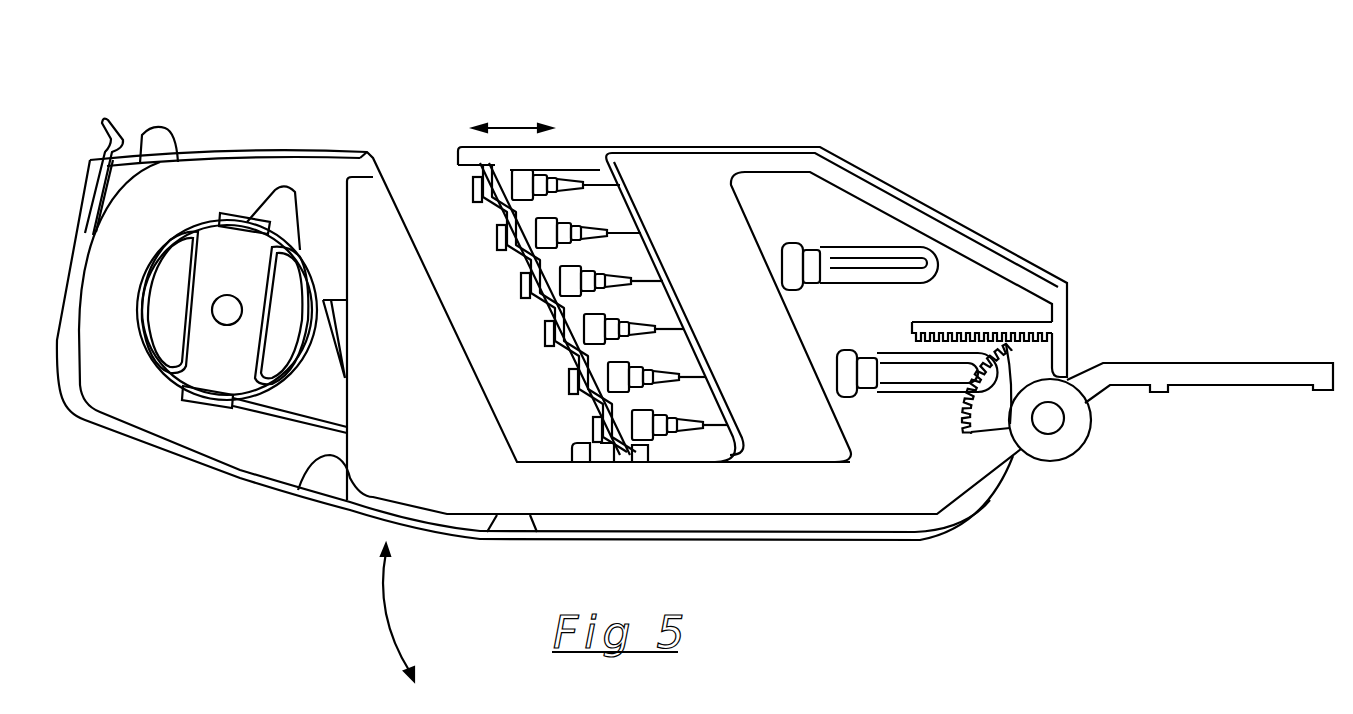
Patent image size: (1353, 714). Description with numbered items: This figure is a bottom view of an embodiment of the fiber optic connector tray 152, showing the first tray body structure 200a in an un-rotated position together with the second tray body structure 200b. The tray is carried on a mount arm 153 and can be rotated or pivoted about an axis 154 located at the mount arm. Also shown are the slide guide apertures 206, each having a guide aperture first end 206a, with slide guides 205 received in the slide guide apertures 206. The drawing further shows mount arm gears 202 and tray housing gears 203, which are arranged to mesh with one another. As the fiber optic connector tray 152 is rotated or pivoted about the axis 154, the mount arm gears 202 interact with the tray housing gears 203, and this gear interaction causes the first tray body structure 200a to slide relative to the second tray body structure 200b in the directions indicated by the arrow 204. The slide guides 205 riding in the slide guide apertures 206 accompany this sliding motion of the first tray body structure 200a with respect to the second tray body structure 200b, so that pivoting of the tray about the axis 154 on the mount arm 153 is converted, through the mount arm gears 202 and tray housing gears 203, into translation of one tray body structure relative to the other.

The fiber optic connector tray 152 is at (263, 132).
The mount arm 153 is at (1239, 372).
The axis 154 is at (1050, 424).
The first tray body structure 200a is at (617, 113).
The second tray body structure 200b is at (262, 484).
The mount arm gears 202 is at (1004, 430).
The tray housing gears 203 is at (990, 335).
The arrow 204 is at (513, 127).
The slide guides 205 is at (874, 362).
The slide guide apertures 206 is at (900, 268).
The guide aperture first end 206a is at (857, 233).